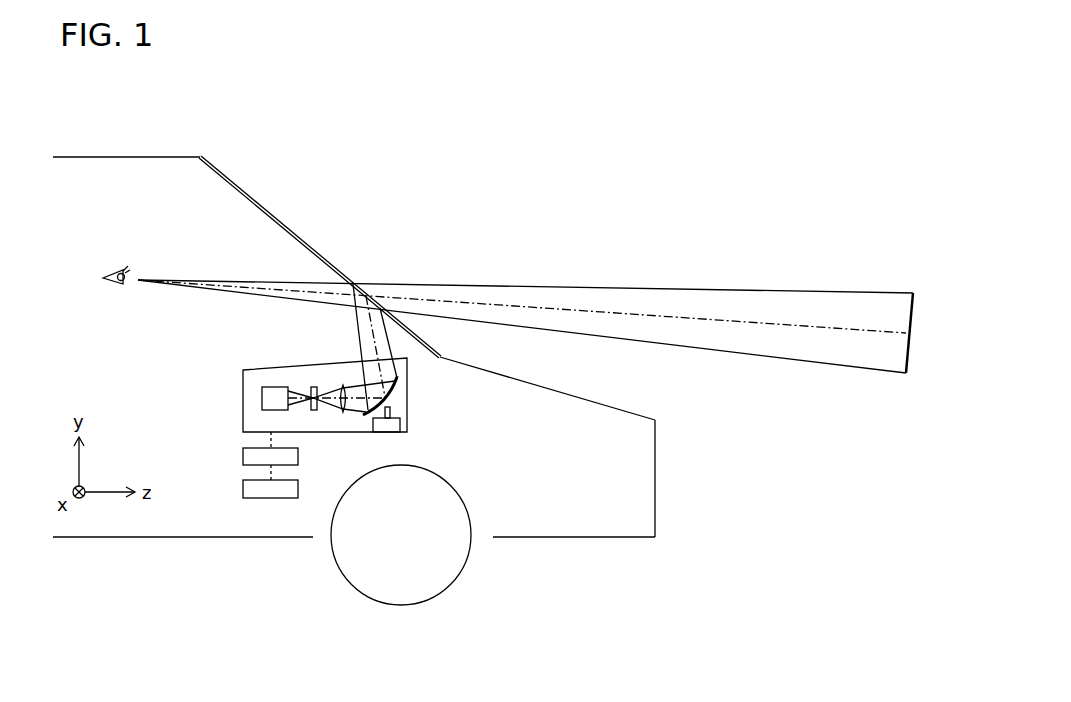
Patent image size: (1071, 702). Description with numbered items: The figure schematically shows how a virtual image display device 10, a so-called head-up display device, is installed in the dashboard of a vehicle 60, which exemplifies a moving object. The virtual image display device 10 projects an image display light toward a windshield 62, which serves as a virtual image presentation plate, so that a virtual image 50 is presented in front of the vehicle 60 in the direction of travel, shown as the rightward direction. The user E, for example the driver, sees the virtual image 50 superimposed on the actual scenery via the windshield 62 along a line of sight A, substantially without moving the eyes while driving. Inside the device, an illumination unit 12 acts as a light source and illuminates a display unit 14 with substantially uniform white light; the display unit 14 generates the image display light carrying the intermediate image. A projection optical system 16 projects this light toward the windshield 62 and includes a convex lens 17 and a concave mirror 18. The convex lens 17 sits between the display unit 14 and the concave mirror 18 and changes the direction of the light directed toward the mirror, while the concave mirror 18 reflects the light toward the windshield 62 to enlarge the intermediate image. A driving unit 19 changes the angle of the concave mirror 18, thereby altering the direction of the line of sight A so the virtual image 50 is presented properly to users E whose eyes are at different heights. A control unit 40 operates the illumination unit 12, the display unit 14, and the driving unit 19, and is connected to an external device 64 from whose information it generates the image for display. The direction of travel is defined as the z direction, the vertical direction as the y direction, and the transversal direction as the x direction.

The virtual image display device 10 is at (239, 376).
The illumination unit 12 is at (262, 399).
The display unit 14 is at (313, 387).
The projection optical system 16 is at (396, 401).
The convex lens 17 is at (344, 412).
The concave mirror 18 is at (399, 381).
The driving unit 19 is at (388, 432).
The control unit 40 is at (243, 456).
The virtual image 50 is at (920, 278).
The vehicle 60 is at (88, 150).
The windshield 62 is at (291, 230).
The external device 64 is at (243, 489).
The line of sight A is at (702, 318).
The user E is at (115, 268).